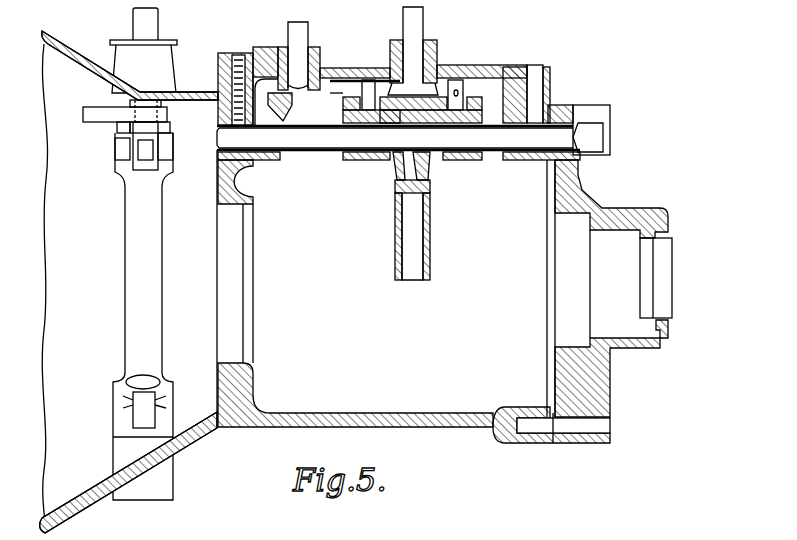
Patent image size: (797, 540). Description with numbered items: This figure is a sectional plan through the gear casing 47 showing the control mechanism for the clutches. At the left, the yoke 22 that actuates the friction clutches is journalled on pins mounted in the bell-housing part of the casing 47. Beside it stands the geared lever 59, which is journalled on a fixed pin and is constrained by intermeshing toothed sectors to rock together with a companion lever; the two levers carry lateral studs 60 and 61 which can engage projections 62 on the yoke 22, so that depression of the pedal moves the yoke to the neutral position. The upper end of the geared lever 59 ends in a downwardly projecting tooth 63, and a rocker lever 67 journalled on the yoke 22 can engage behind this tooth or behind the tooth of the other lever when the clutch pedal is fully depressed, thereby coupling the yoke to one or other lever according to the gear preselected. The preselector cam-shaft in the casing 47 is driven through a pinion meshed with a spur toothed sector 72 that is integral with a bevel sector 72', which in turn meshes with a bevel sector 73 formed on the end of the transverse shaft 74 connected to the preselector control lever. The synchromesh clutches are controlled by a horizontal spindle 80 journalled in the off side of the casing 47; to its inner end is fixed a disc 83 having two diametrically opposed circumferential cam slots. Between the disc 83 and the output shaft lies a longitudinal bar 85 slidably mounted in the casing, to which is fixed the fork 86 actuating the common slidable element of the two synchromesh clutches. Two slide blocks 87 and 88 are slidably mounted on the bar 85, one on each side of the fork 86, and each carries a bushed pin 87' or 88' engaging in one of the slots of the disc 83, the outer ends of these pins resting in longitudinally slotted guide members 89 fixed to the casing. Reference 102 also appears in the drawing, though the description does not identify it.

The yoke 22 is at (157, 288).
The casing 47 is at (447, 413).
The geared lever 59 is at (99, 112).
The lateral stud 60 is at (168, 131).
The lateral stud 61 is at (117, 128).
The projections 62 is at (130, 140).
The downwardly projecting tooth 63 is at (159, 112).
The rocker lever 67 is at (140, 142).
The spur toothed sector 72 is at (251, 167).
The bevel sector 72' is at (264, 101).
The bevel sector 73 is at (289, 105).
The transverse shaft 74 is at (309, 48).
The horizontal spindle 80 is at (425, 36).
The disc 83 is at (482, 106).
The longitudinal bar 85 is at (498, 142).
The fork 86 is at (415, 230).
The slide block 87 is at (366, 167).
The bushed pin 87' is at (373, 80).
The slide block 88 is at (462, 166).
The bushed pin 88' is at (460, 78).
The slotted guide members 89 is at (338, 86).
The groove 102 is at (357, 81).